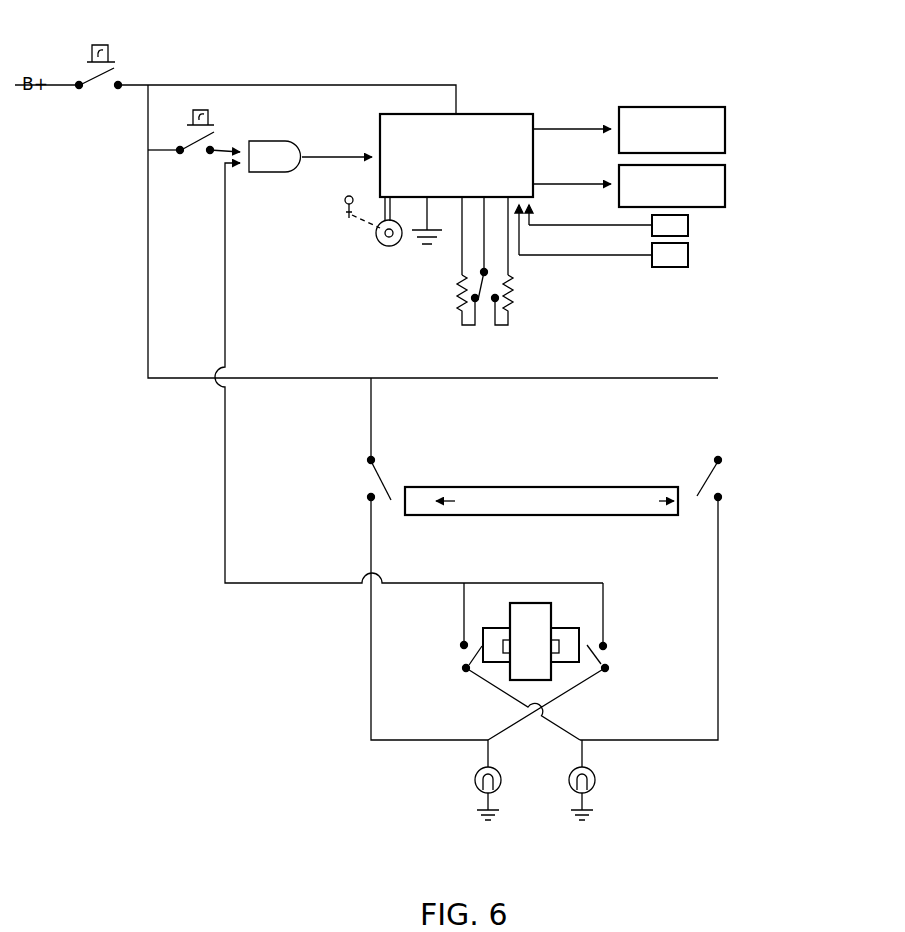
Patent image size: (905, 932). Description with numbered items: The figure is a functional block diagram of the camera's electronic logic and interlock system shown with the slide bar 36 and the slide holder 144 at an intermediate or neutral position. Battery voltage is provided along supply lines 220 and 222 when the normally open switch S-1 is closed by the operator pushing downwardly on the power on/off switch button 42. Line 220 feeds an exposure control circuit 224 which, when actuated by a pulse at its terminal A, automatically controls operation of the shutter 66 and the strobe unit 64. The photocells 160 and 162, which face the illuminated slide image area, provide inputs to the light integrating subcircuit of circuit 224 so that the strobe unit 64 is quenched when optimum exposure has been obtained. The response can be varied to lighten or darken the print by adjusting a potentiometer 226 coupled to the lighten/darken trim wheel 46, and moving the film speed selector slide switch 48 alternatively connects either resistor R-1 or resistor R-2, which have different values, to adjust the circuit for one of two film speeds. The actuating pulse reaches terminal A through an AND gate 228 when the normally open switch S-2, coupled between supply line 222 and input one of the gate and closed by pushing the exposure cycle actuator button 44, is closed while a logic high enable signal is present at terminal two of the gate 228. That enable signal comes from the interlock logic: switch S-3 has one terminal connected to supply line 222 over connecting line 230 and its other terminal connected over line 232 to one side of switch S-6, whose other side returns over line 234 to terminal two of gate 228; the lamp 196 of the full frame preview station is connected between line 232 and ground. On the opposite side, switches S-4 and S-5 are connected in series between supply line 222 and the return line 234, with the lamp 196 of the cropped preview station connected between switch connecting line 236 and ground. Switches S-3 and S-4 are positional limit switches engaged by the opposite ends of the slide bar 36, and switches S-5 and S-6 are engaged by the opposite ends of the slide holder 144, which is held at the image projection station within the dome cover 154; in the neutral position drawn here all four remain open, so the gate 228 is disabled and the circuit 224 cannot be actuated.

The power on/off switch button 42 is at (103, 47).
The exposure cycle actuator button 44 is at (206, 112).
The lighten/darken trim wheel 46 is at (362, 195).
The film speed selector slide switch 48 is at (487, 308).
The slide bar 36 is at (550, 496).
The strobe unit 64 is at (725, 188).
The shutter 66 is at (725, 128).
The slide holder 144 is at (556, 631).
The dome cover 154 is at (464, 630).
The photocell 160 is at (688, 225).
The photocell 162 is at (688, 255).
The lamp 196 is at (605, 782).
The supply line 220 is at (213, 85).
The supply line 222 is at (148, 240).
The exposure control circuit 224 is at (480, 116).
The potentiometer 226 is at (398, 243).
The AND gate 228 is at (262, 141).
The connecting line 230 is at (372, 425).
The line 232 is at (371, 668).
The return line 234 is at (225, 287).
The switch connecting line 236 is at (627, 740).
The normally open switch S-1 is at (102, 87).
The normally open switch S-2 is at (197, 151).
The microswitch S-3 is at (392, 494).
The microswitch S-4 is at (694, 492).
The microswitch S-5 is at (470, 654).
The microswitch S-6 is at (603, 653).
The resistor R-1 is at (456, 296).
The resistor R-2 is at (513, 278).